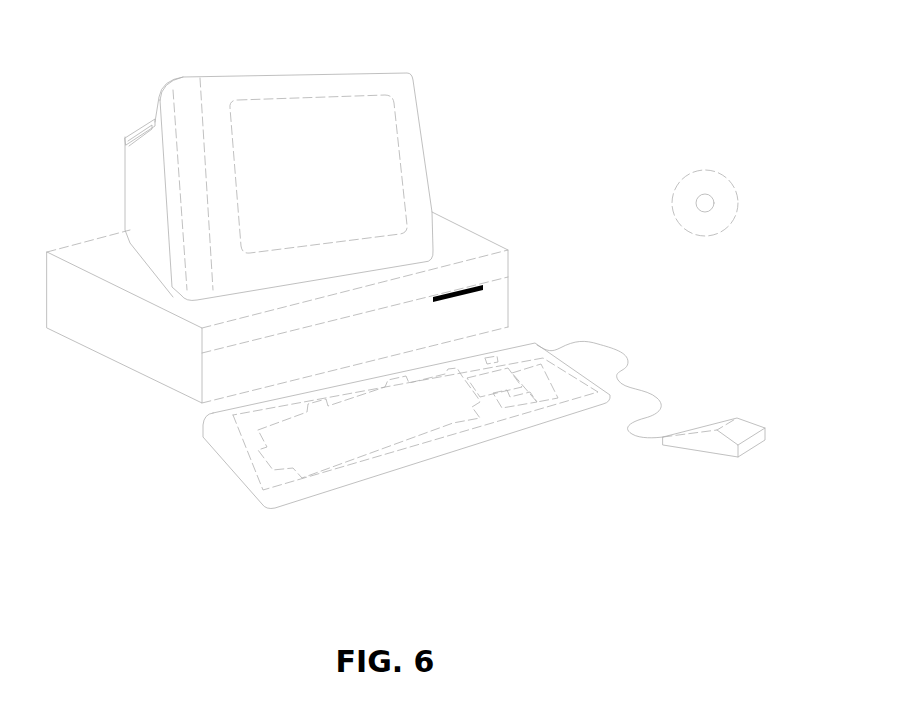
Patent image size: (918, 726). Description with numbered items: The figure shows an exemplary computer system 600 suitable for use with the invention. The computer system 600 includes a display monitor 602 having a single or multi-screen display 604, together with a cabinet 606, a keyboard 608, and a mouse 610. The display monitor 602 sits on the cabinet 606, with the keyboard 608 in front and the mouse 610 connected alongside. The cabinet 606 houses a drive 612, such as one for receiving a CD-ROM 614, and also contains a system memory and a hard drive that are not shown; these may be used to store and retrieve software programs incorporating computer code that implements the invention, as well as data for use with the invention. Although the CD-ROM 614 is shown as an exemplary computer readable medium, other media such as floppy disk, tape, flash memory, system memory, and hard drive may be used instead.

The computer system 600 is at (438, 278).
The display monitor 602 is at (427, 187).
The display 604 is at (383, 137).
The cabinet 606 is at (163, 387).
The keyboard 608 is at (413, 463).
The mouse 610 is at (753, 420).
The drive 612 is at (483, 283).
The CD-ROM 614 is at (722, 175).